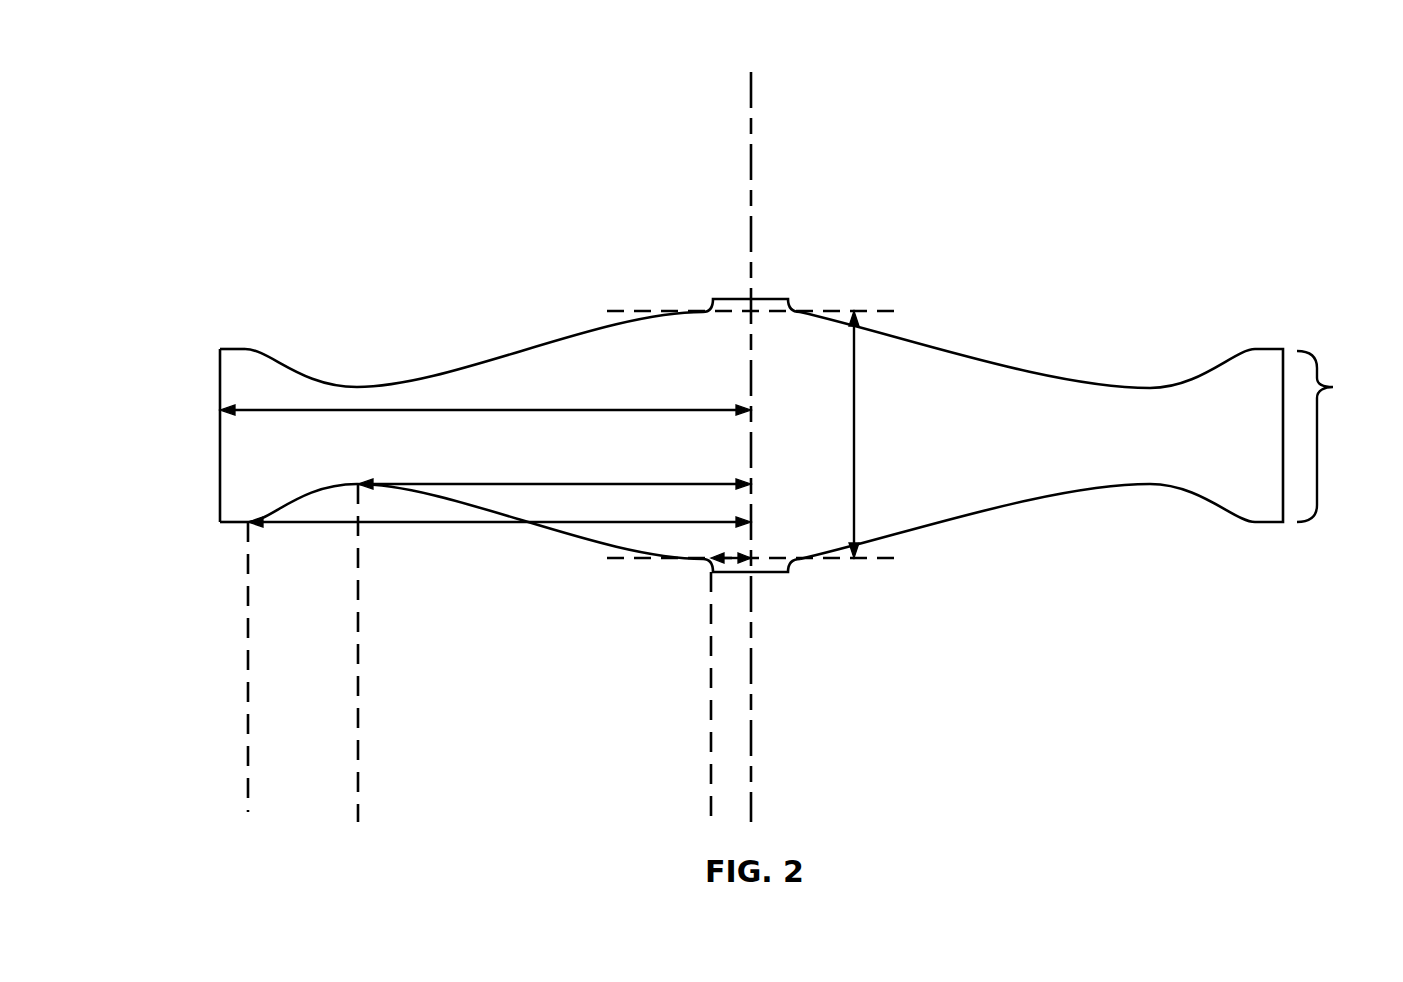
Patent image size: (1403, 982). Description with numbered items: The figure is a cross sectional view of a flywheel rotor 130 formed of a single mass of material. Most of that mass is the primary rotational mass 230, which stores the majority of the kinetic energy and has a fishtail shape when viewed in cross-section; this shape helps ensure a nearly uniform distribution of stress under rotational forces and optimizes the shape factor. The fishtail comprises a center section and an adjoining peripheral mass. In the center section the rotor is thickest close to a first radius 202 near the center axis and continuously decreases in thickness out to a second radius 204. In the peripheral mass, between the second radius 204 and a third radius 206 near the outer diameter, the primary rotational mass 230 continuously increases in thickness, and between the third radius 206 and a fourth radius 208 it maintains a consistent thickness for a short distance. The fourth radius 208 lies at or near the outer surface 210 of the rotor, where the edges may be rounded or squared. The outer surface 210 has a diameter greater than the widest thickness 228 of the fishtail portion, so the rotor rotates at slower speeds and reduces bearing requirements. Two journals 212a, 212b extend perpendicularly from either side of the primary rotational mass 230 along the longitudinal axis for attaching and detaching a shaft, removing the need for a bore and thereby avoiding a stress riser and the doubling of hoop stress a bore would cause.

The flywheel rotor 130 is at (328, 88).
The first radius 202 is at (740, 564).
The second radius 204 is at (460, 484).
The third radius 206 is at (307, 524).
The fourth radius 208 is at (375, 408).
The outer surface 210 is at (220, 433).
The journal 212a is at (745, 310).
The journal 212b is at (772, 572).
The widest thickness 228 is at (856, 508).
The primary rotational mass 230 is at (1316, 435).